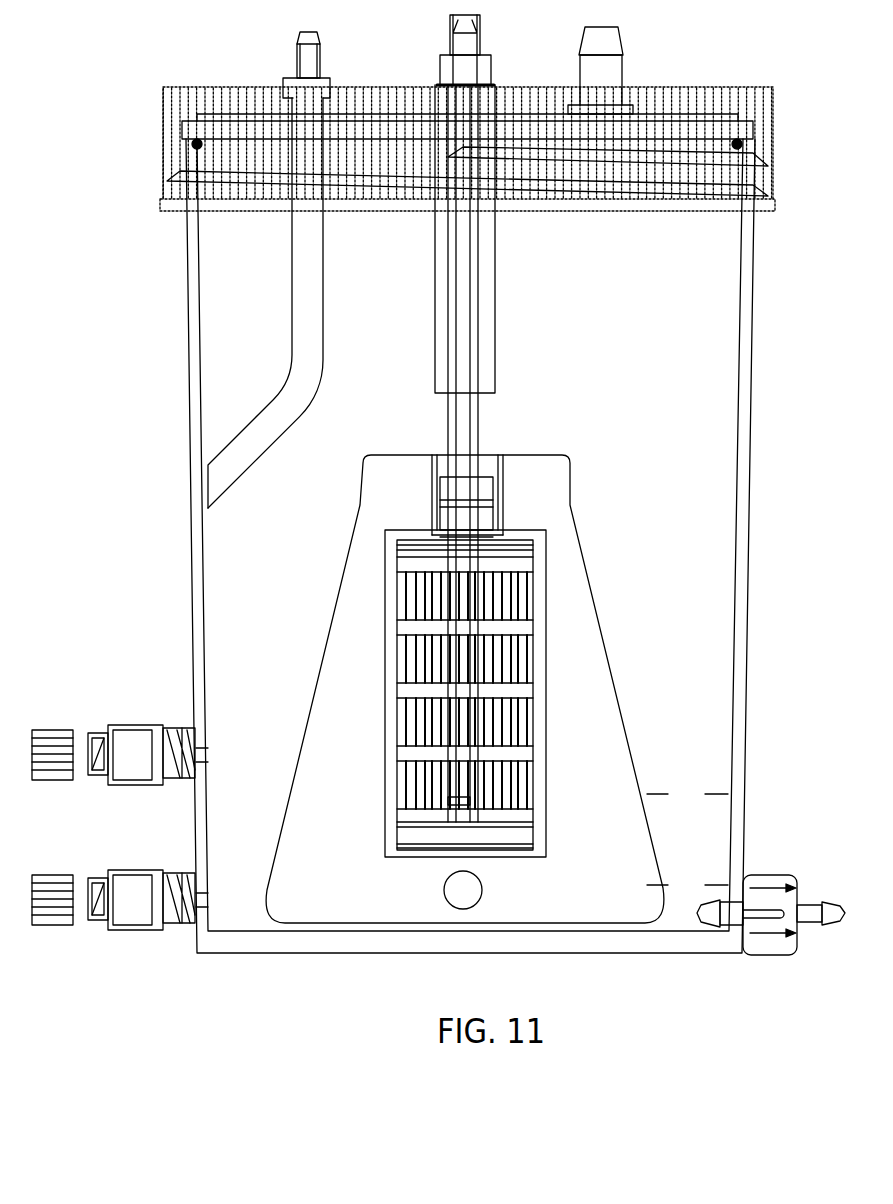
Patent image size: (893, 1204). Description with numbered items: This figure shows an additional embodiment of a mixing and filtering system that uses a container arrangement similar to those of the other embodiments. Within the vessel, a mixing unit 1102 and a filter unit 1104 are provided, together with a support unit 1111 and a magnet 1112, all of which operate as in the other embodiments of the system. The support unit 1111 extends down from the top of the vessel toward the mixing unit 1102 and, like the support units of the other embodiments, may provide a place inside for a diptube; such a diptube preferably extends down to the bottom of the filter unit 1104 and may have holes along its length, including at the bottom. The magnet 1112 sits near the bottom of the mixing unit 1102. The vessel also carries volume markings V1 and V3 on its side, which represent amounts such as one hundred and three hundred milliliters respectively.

The mixing unit 1102 is at (570, 477).
The filter unit 1104 is at (532, 654).
The support unit 1111 is at (478, 422).
The magnet 1112 is at (483, 890).
The volume marking V1 is at (687, 886).
The volume marking V3 is at (687, 795).